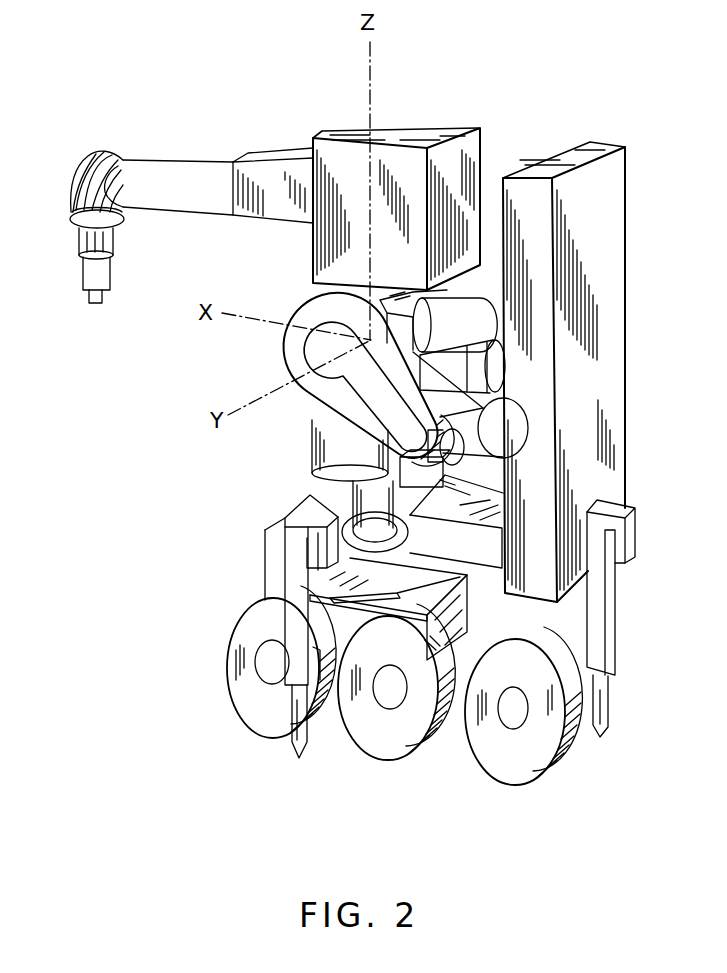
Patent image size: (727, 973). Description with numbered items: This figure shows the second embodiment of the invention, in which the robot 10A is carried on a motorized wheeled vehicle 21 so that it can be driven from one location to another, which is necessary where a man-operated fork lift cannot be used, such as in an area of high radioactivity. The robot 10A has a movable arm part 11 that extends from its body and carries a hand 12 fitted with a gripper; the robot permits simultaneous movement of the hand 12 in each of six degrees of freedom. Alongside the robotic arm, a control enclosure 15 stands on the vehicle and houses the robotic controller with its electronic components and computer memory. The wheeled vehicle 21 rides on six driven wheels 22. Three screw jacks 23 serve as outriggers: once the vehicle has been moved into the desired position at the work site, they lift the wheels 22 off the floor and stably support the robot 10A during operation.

The robot 10A is at (482, 148).
The movable arm part 11 is at (180, 167).
The hand 12 is at (83, 242).
The control enclosure 15 is at (627, 330).
The motorized wheeled vehicle 21 is at (266, 576).
The driven wheels 22 is at (260, 728).
The screw jacks 23 is at (292, 627).